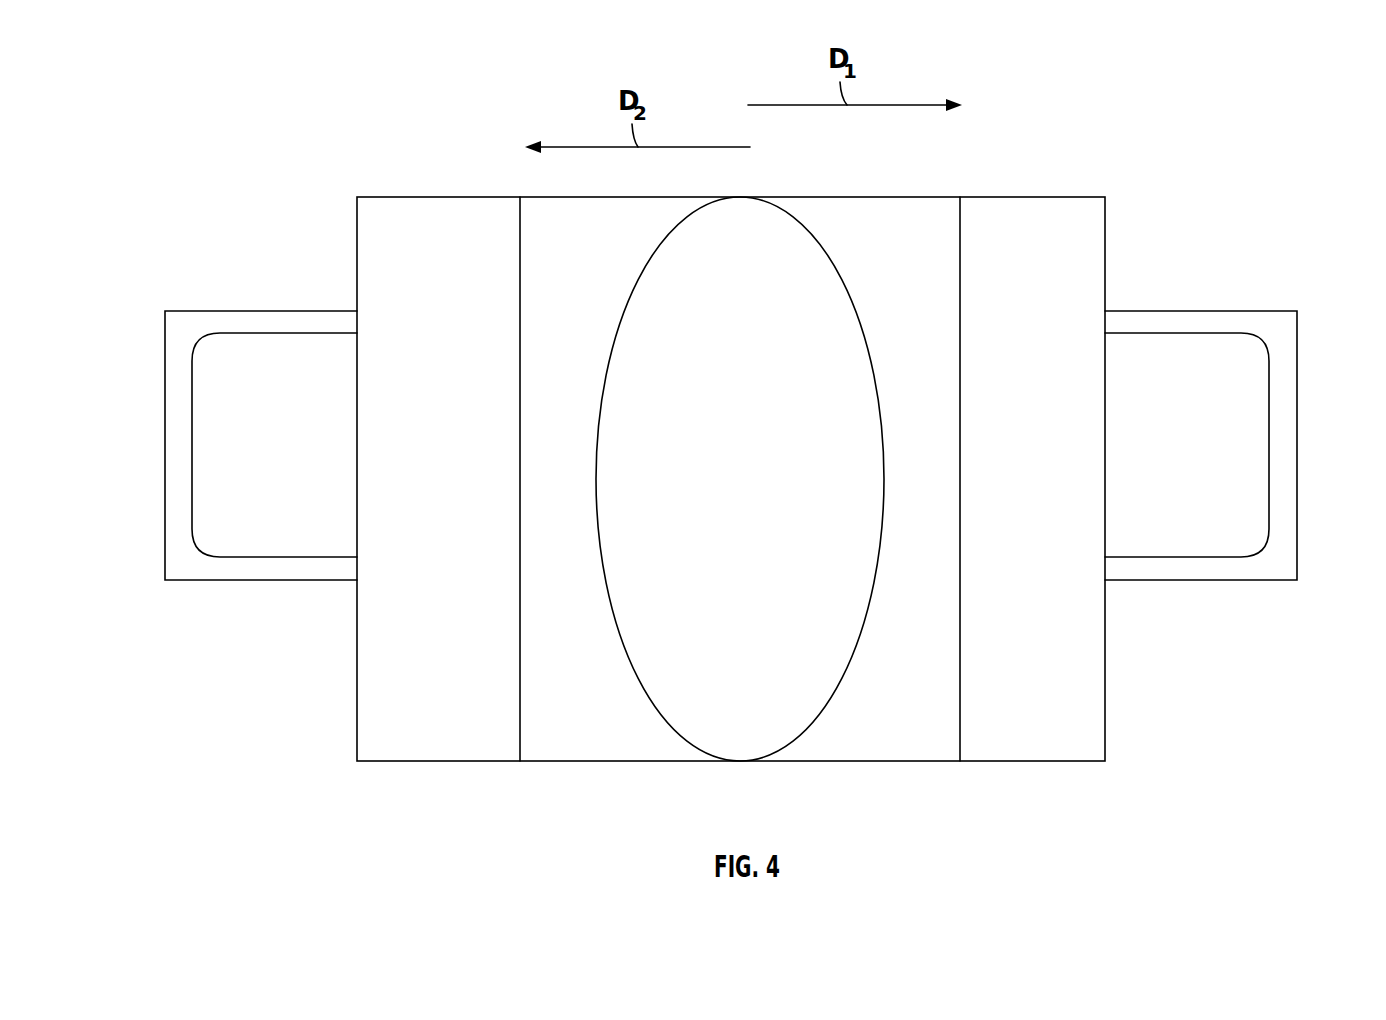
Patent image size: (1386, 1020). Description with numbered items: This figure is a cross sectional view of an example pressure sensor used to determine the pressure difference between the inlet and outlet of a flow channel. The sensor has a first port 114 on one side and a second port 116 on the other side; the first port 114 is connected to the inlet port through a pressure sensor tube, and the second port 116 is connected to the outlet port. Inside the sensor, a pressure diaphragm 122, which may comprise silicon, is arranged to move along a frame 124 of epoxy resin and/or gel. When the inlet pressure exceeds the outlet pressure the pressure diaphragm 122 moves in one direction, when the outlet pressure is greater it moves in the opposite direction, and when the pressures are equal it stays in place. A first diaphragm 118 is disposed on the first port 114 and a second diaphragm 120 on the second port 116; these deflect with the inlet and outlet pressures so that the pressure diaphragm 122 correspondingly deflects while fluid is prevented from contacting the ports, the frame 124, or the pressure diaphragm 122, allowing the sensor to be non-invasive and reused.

The first port 114 is at (243, 457).
The second port 116 is at (1225, 457).
The first diaphragm 118 is at (187, 581).
The second diaphragm 120 is at (1255, 581).
The pressure diaphragm 122 is at (405, 196).
The frame 124 is at (960, 692).